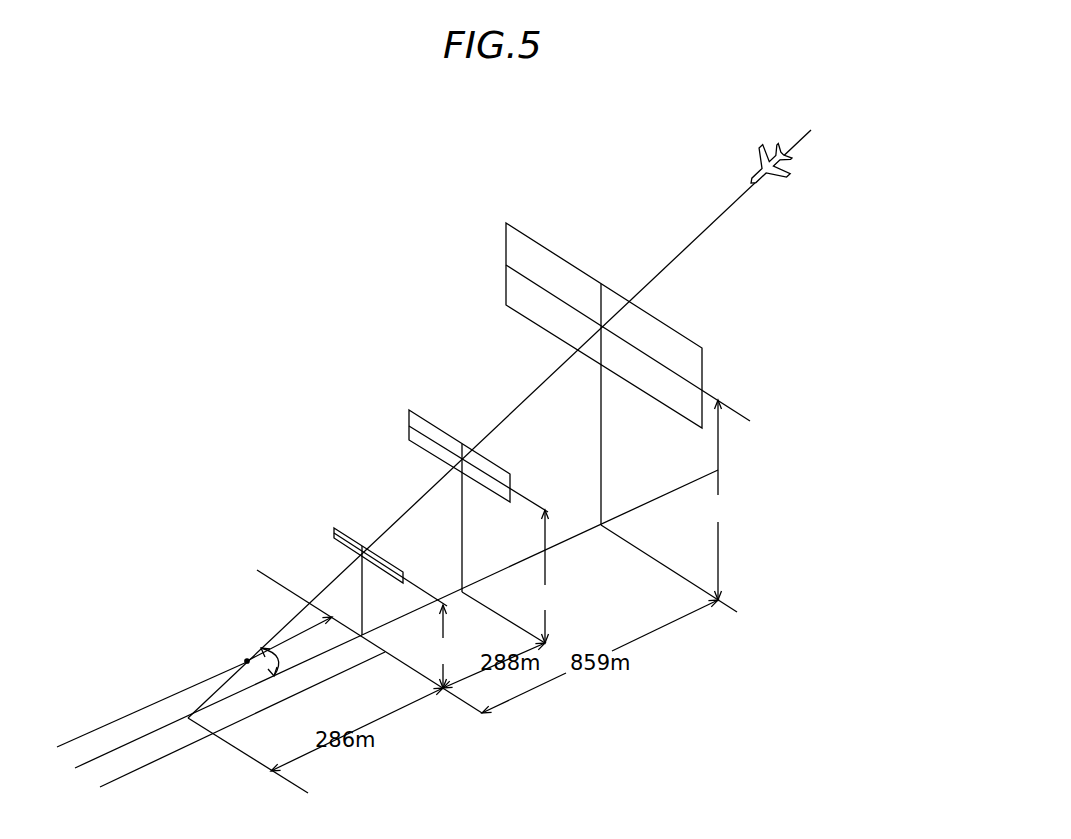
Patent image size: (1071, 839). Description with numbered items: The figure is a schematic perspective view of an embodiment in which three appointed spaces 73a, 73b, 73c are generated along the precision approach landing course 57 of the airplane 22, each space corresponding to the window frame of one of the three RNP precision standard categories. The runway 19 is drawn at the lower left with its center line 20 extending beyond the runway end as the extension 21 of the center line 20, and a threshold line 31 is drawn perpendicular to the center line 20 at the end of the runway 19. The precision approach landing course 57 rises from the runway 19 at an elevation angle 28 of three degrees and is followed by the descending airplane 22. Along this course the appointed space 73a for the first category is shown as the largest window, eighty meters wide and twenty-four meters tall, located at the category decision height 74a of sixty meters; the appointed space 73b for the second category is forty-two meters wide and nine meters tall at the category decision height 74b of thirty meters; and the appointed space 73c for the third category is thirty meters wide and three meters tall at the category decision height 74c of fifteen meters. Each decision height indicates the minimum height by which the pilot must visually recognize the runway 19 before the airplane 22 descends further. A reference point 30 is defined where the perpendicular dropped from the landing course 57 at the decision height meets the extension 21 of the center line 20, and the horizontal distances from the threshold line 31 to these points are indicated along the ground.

The runway 19 is at (83, 736).
The center line 20 is at (288, 675).
The extension of the center line 21 is at (645, 504).
The airplane 22 is at (746, 168).
The elevation angle 28 is at (245, 661).
The reference point 30 is at (363, 623).
The threshold line 31 is at (272, 581).
The precision approach landing course 57 is at (707, 228).
The appointed space 73a is at (690, 340).
The appointed space 73b is at (486, 457).
The appointed space 73c is at (380, 557).
The category decision height 74a is at (721, 447).
The category decision height 74b is at (549, 548).
The category decision height 74c is at (441, 615).